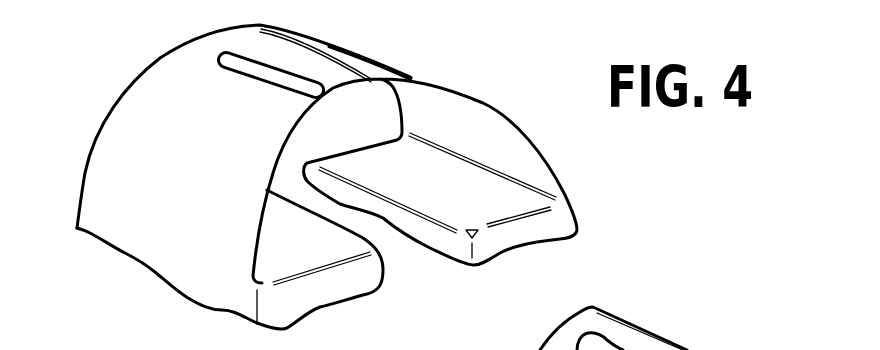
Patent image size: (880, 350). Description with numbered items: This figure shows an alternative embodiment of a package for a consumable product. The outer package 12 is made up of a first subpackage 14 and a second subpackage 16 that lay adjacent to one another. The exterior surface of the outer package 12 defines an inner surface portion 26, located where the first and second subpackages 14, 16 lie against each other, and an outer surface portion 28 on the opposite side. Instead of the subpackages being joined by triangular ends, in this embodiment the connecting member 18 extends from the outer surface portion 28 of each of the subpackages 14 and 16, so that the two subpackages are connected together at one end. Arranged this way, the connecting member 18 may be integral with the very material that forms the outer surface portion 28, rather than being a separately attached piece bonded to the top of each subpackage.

The outer package 12 is at (567, 225).
The first subpackage 14 is at (273, 317).
The second subpackage 16 is at (487, 245).
The connecting member 18 is at (458, 90).
The inner surface portion 26 is at (356, 210).
The outer surface portion 28 is at (165, 243).